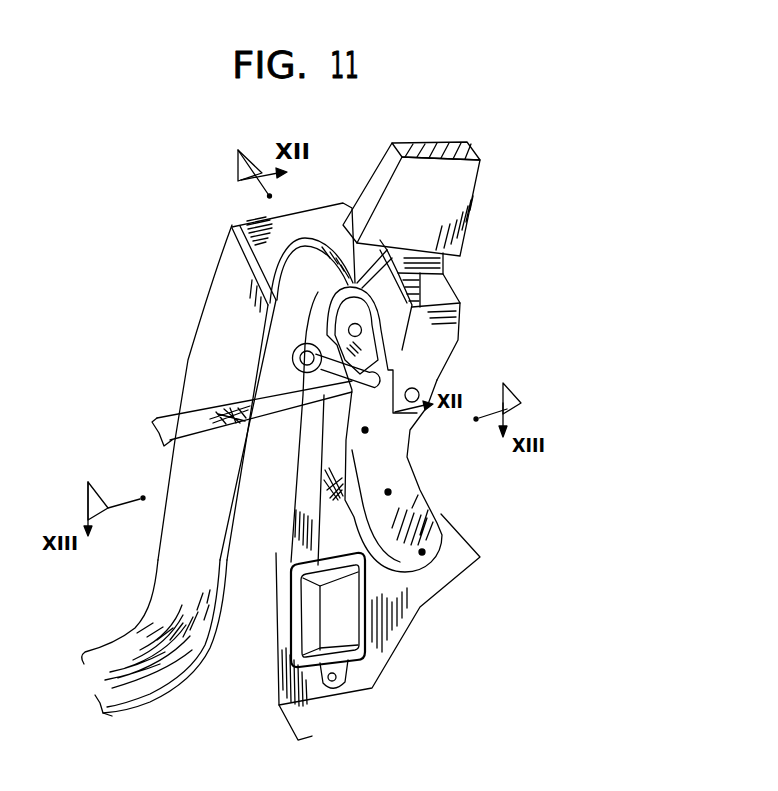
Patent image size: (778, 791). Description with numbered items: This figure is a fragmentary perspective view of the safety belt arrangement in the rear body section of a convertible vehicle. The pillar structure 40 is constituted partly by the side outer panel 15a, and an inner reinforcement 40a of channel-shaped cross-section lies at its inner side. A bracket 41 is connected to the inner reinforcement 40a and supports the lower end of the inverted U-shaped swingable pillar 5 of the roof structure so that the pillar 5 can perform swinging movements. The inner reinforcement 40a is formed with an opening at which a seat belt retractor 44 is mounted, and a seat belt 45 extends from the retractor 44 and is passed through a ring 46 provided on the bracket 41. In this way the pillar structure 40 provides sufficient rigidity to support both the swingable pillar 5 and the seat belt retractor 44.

The swingable pillar 5 is at (440, 207).
The side outer panel 15a is at (184, 470).
The pillar structure 40 is at (175, 287).
The inner reinforcement 40a is at (250, 553).
The bracket 41 is at (403, 482).
The seat belt retractor 44 is at (347, 627).
The seat belt 45 is at (330, 543).
The ring 46 is at (293, 349).